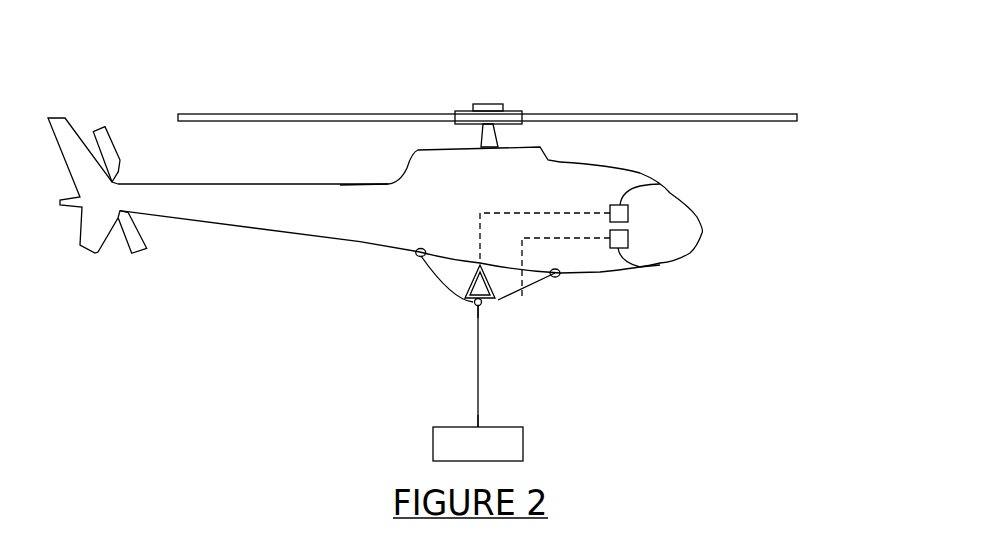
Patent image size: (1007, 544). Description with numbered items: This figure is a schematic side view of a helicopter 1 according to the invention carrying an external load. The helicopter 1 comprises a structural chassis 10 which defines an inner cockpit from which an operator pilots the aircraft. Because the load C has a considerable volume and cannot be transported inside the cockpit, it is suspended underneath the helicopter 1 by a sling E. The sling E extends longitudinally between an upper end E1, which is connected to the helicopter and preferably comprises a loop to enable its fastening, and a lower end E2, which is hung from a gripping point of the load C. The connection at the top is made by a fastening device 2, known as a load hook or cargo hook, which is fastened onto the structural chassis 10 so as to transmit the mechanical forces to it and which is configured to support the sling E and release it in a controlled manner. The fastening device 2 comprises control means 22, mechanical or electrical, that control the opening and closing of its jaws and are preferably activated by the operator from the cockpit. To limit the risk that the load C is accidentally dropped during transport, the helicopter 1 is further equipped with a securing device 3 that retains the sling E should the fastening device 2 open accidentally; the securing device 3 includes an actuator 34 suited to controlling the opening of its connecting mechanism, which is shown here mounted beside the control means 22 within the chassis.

The helicopter 1 is at (608, 88).
The fastening device 2 is at (500, 304).
The securing device 3 is at (430, 279).
The structural chassis 10 is at (600, 274).
The control means 22 is at (650, 186).
The actuator 34 is at (637, 263).
The sling E is at (477, 372).
The upper end of the sling E1 is at (472, 315).
The lower end of the sling E2 is at (475, 422).
The load C is at (523, 445).